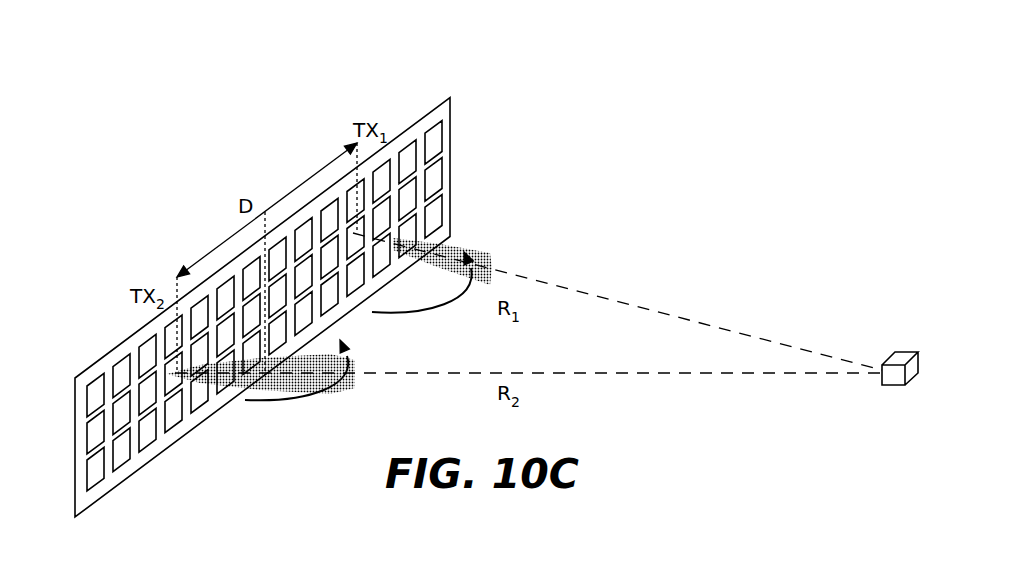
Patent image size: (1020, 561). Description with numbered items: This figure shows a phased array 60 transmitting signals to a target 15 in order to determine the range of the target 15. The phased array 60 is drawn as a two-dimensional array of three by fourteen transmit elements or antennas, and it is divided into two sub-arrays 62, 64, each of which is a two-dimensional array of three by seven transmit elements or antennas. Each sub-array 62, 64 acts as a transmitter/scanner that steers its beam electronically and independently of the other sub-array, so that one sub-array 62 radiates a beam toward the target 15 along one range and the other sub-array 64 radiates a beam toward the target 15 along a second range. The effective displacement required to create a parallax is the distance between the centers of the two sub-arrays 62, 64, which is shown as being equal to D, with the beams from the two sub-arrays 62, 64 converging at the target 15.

The phased array 60 is at (242, 191).
The sub-array 62 is at (453, 68).
The sub-array 64 is at (258, 194).
The target 15 is at (889, 387).